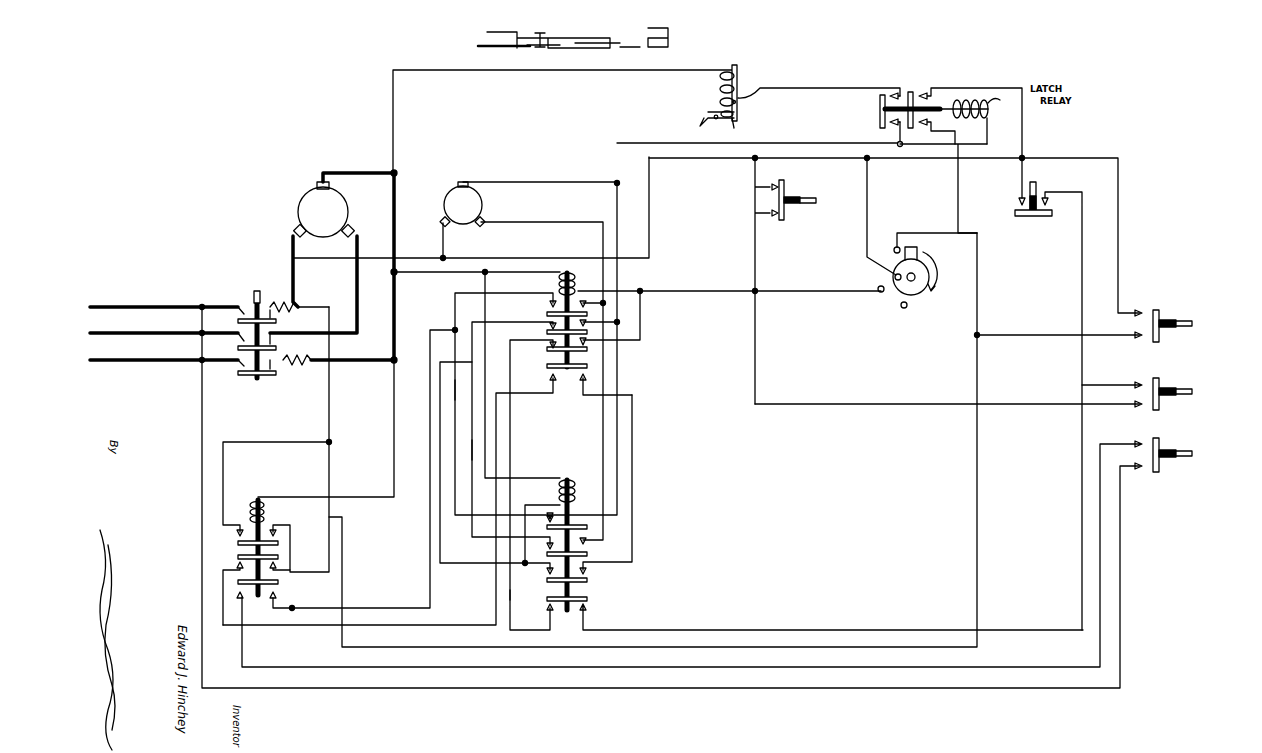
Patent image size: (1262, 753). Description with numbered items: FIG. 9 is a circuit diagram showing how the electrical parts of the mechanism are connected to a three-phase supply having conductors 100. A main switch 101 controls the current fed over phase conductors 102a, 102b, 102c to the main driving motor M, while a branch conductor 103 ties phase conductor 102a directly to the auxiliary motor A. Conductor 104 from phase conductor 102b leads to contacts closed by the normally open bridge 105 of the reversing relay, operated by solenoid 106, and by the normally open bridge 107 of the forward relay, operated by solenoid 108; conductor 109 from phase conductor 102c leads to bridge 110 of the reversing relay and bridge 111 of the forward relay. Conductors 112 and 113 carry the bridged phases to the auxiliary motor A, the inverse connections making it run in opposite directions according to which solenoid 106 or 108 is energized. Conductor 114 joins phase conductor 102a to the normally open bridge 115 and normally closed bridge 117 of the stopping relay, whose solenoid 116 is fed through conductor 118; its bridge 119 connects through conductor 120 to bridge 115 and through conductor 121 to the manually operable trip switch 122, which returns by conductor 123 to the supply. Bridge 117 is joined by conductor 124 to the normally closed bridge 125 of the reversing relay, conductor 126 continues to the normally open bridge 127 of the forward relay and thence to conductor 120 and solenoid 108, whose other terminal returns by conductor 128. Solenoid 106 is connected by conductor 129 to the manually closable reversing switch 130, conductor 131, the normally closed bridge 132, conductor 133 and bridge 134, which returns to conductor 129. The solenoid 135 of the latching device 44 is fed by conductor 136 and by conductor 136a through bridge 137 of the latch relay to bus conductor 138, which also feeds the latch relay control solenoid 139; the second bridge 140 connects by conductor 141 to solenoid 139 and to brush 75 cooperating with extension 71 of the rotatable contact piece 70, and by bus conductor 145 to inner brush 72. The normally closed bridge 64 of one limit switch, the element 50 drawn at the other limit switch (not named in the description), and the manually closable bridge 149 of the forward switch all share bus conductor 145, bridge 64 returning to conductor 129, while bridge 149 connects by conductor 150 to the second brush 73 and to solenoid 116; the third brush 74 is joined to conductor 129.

The latching device 44 is at (704, 120).
The limit switch 50 is at (1035, 217).
The bridge of the other limit switch 64 is at (790, 215).
The rotatable contact piece 70 is at (924, 284).
The extension 71 is at (918, 254).
The inner brush 72 is at (884, 222).
The second brush 73 is at (897, 246).
The third brush 74 is at (878, 288).
The brush 75 is at (902, 309).
The conductors 100 is at (208, 300).
The main switch 101 is at (255, 300).
The phase conductor 102a is at (291, 244).
The phase conductor 102b is at (352, 243).
The phase conductor 102c is at (395, 198).
The branch conductor 103 is at (443, 241).
The conductor 104 is at (453, 388).
The normally open bridge 105 is at (547, 314).
The solenoid 106 is at (571, 272).
The normally open bridge 107 is at (587, 528).
The solenoid 108 is at (572, 480).
The conductor 109 is at (470, 446).
The bridge 110 is at (547, 332).
The bridge 111 is at (587, 555).
The conductor 112 is at (540, 222).
The conductor 113 is at (549, 183).
The conductor 114 is at (327, 395).
The bridge 115 is at (238, 543).
The solenoid 116 is at (250, 503).
The bridge 117 is at (238, 558).
The conductor 118 is at (392, 398).
The bridge 119 is at (238, 582).
The conductor 120 is at (318, 597).
The conductor 121 is at (1100, 540).
The trip switch 122 is at (1162, 469).
The conductor 123 is at (202, 410).
The conductor 124 is at (437, 625).
The bridge 125 is at (547, 366).
The conductor 126 is at (633, 485).
The bridge 127 is at (587, 580).
The conductor 128 is at (472, 271).
The conductor 129 is at (664, 303).
The reversing switch 130 is at (1162, 403).
The conductor 131 is at (1082, 290).
The bridge 132 is at (587, 599).
The conductor 133 is at (510, 597).
The bridge 134 is at (547, 349).
The solenoid 135 is at (746, 83).
The conductor 136 is at (556, 72).
The conductor 136a is at (834, 88).
The bridge 137 is at (879, 108).
The bus conductor 138 is at (795, 143).
The control solenoid 139 is at (979, 121).
The second bridge 140 is at (914, 93).
The conductor 141 is at (950, 132).
The bus conductor 145 is at (704, 158).
The bridge of the forward switch 149 is at (1148, 313).
The conductor 150 is at (979, 283).